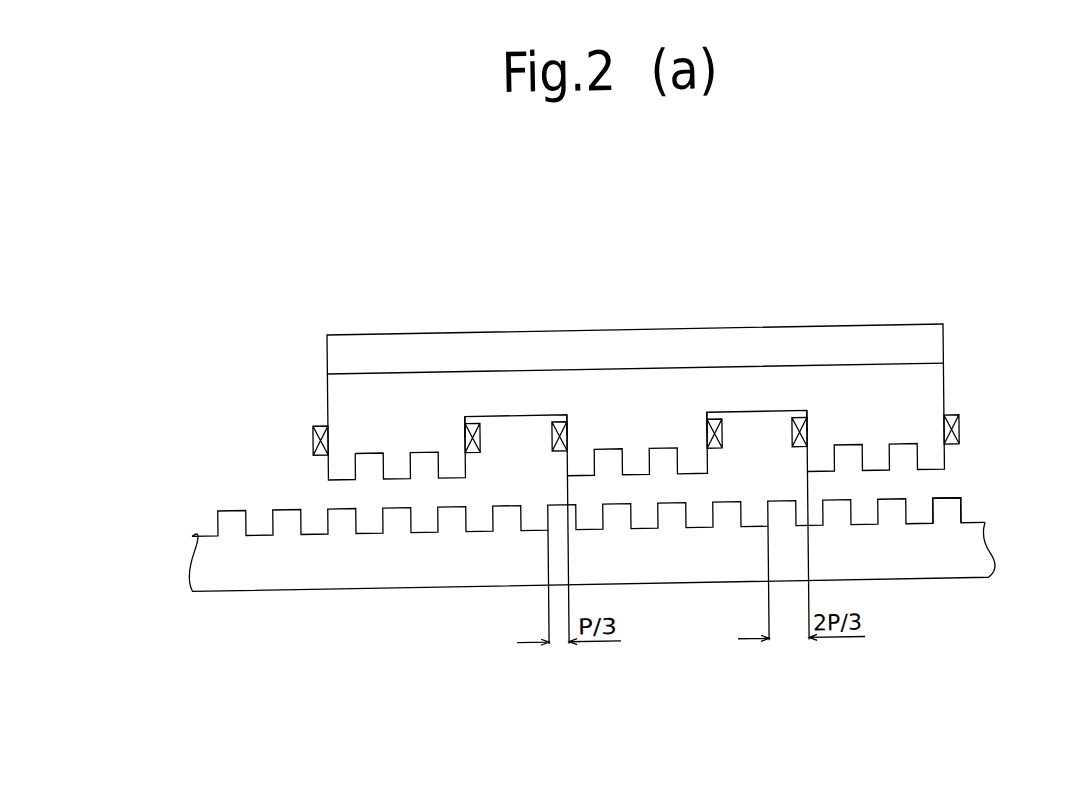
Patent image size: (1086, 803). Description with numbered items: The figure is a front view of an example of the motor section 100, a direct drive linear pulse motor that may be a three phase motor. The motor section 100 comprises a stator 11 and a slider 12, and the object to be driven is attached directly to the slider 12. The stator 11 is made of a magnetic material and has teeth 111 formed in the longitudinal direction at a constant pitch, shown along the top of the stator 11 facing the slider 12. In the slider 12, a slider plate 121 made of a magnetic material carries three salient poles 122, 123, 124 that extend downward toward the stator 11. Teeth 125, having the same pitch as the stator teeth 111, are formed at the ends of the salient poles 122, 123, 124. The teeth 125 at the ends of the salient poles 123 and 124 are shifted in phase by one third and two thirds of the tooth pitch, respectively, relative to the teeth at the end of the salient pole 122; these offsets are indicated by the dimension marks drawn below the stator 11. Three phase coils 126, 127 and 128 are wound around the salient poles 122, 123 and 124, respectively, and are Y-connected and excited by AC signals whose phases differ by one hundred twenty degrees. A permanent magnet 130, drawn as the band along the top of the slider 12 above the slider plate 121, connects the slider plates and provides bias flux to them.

The motor section 100 is at (177, 430).
The slider 12 is at (481, 335).
The slider plate 121 is at (688, 399).
The salient pole 122 is at (369, 404).
The salient pole 123 is at (600, 415).
The salient pole 124 is at (902, 410).
The teeth 125 is at (341, 468).
The coil 126 is at (312, 432).
The coil 127 is at (551, 437).
The coil 128 is at (792, 440).
The permanent magnet 130 is at (358, 354).
The stator 11 is at (911, 577).
The teeth 111 is at (948, 518).